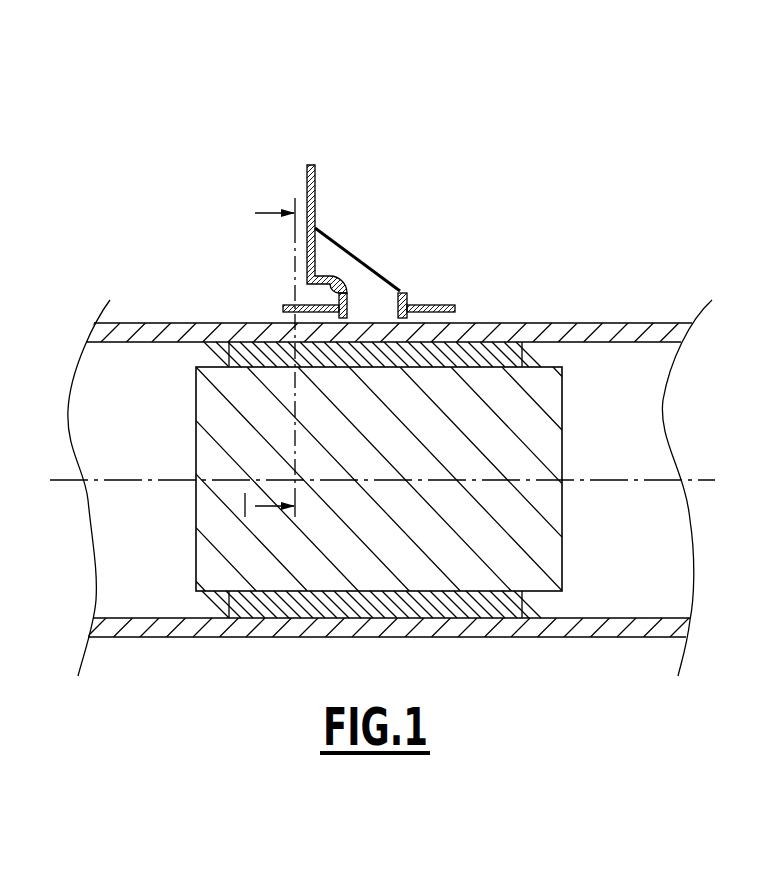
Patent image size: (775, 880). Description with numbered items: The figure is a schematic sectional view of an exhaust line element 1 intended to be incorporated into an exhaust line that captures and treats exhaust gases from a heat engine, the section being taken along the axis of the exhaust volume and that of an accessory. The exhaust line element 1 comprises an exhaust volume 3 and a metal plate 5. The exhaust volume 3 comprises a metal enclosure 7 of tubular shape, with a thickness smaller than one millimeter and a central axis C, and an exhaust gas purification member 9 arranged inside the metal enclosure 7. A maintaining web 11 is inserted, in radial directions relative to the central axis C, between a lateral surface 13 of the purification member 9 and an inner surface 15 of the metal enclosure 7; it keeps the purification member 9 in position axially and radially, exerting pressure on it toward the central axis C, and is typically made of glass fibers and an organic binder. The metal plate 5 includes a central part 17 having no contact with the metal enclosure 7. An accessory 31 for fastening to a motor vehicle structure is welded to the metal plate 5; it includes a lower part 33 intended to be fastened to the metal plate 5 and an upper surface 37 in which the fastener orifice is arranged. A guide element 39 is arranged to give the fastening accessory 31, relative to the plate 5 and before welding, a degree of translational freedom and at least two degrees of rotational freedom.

The exhaust line element 1 is at (601, 121).
The exhaust volume 3 is at (383, 432).
The metal plate 5 is at (284, 301).
The metal enclosure 7 is at (641, 324).
The exhaust gas purification member 9 is at (215, 570).
The maintaining web 11 is at (493, 605).
The lateral surface 13 is at (199, 364).
The inner surface 15 is at (226, 340).
The central part 17 is at (297, 305).
The accessory 31 is at (318, 218).
The lower part 33 is at (348, 299).
The upper surface 37 is at (317, 177).
The guide element 39 is at (414, 289).
The central axis C is at (597, 478).